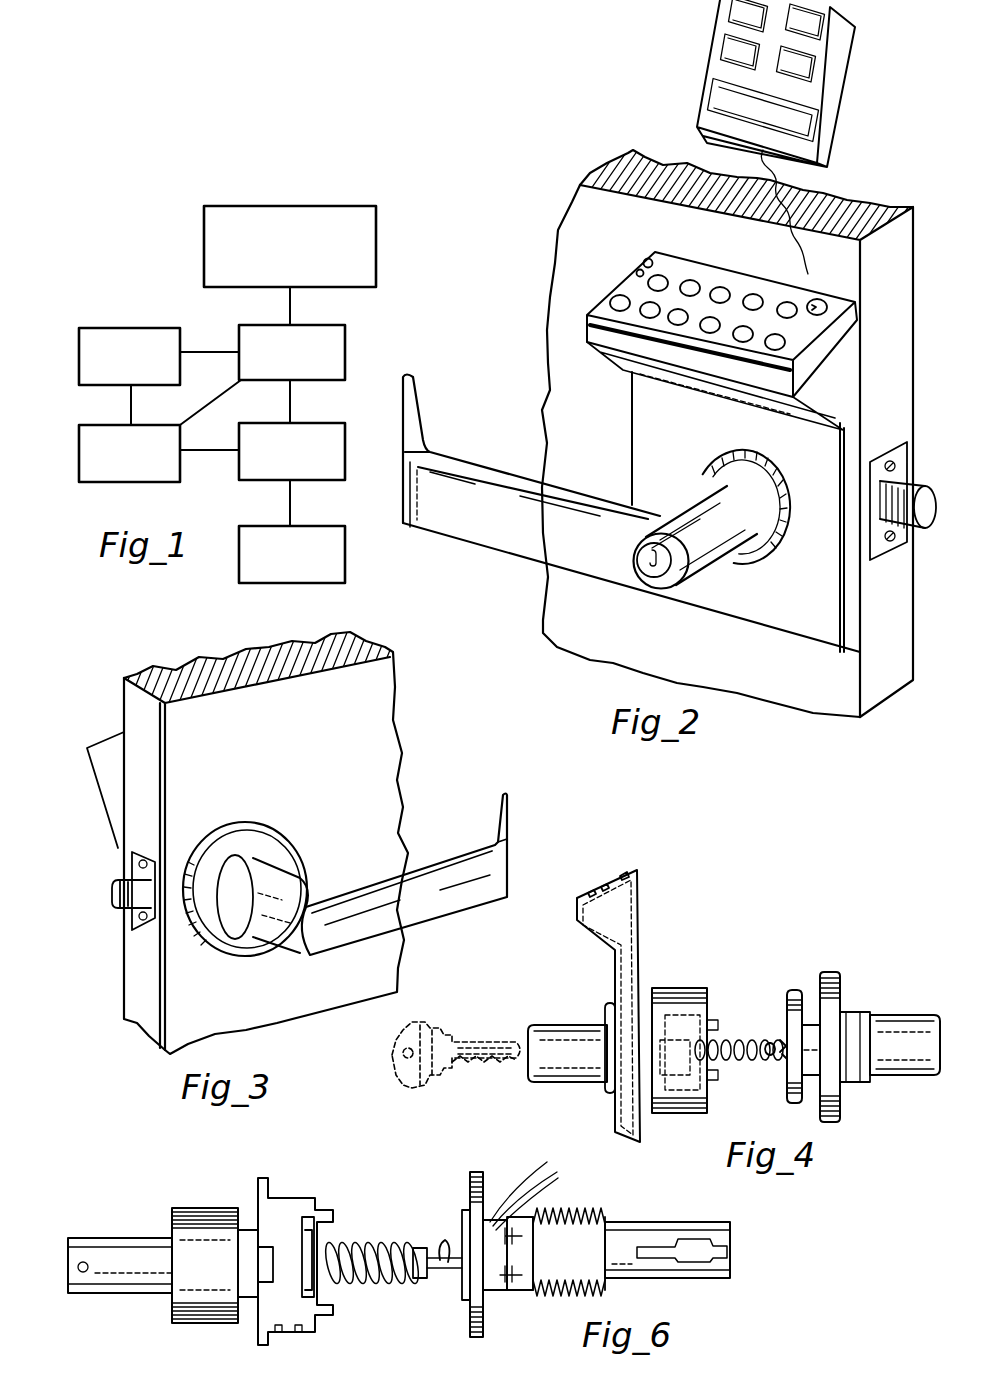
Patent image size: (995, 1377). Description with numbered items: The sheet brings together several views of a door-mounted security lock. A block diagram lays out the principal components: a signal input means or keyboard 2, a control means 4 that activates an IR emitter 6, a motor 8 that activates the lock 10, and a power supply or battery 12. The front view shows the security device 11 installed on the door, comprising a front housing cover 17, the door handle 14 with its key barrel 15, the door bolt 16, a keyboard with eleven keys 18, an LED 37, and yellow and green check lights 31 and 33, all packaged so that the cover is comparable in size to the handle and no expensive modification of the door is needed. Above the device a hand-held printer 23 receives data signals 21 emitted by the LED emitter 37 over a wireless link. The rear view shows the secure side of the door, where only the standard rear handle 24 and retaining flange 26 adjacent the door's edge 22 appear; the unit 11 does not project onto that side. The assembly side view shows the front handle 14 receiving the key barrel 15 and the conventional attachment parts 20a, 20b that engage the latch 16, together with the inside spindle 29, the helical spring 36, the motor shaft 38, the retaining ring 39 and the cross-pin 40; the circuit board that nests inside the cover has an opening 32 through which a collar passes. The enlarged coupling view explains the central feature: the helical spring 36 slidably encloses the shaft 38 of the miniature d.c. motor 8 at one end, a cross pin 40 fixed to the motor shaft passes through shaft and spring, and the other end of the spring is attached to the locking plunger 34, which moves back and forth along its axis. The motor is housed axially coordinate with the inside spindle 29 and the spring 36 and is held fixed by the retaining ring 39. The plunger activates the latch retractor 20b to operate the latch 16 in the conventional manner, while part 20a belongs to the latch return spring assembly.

In FIG. 1, the signal input means (keyboard) 2 is at (302, 258).
In FIG. 1, the control means 4 is at (302, 366).
In FIG. 1, the IR emitter 6 is at (142, 369).
In FIG. 1, the motor 8 is at (302, 464).
In FIG. 6, the motor 8 is at (494, 1290).
In FIG. 1, the lock 10 is at (300, 568).
In FIG. 1, the power supply (battery) 12 is at (140, 466).
In FIG. 2, the security device 11 is at (540, 354).
In FIG. 2, the door handle 14 is at (523, 537).
In FIG. 4, the door handle 14 is at (560, 1028).
In FIG. 2, the key barrel 15 is at (648, 578).
In FIG. 4, the key barrel 15 is at (528, 1058).
In FIG. 2, the door bolt (latch) 16 is at (922, 527).
In FIG. 3, the door bolt (latch) 16 is at (112, 900).
In FIG. 2, the front housing cover 17 is at (685, 445).
In FIG. 3, the front housing cover 17 is at (112, 741).
In FIG. 4, the front housing cover 17 is at (634, 918).
In FIG. 2, the keyboard keys 18 is at (662, 278).
In FIG. 4, the keyboard keys 18 is at (600, 882).
In FIG. 6, the attachment part (latch return spring assembly) 20a is at (195, 1208).
In FIG. 6, the latch retractor 20b is at (288, 1198).
In FIG. 2, the data signals 21 is at (798, 243).
In FIG. 3, the door's edge 22 is at (141, 982).
In FIG. 2, the hand-held printer 23 is at (706, 78).
In FIG. 3, the rear handle 24 is at (412, 922).
In FIG. 4, the rear handle 24 is at (893, 1015).
In FIG. 3, the retaining flange 26 is at (221, 830).
In FIG. 4, the retaining flange 26 is at (833, 972).
In FIG. 6, the inside spindle 29 is at (628, 1222).
In FIG. 2, the yellow check light 31 is at (644, 261).
In FIG. 6, the opening 32 is at (118, 1240).
In FIG. 2, the green check light 33 is at (636, 271).
In FIG. 6, the locking plunger 34 is at (322, 1280).
In FIG. 4, the helical spring 36 is at (730, 1040).
In FIG. 6, the helical spring 36 is at (378, 1240).
In FIG. 2, the LED (light emitting diode) emitter 37 is at (818, 298).
In FIG. 4, the LED (light emitting diode) emitter 37 is at (627, 872).
In FIG. 4, the motor shaft 38 is at (779, 1058).
In FIG. 6, the motor shaft 38 is at (442, 1240).
In FIG. 4, the retaining ring 39 is at (793, 988).
In FIG. 6, the retaining ring 39 is at (476, 1172).
In FIG. 4, the cross-pin 40 is at (770, 1040).
In FIG. 6, the cross-pin 40 is at (425, 1280).